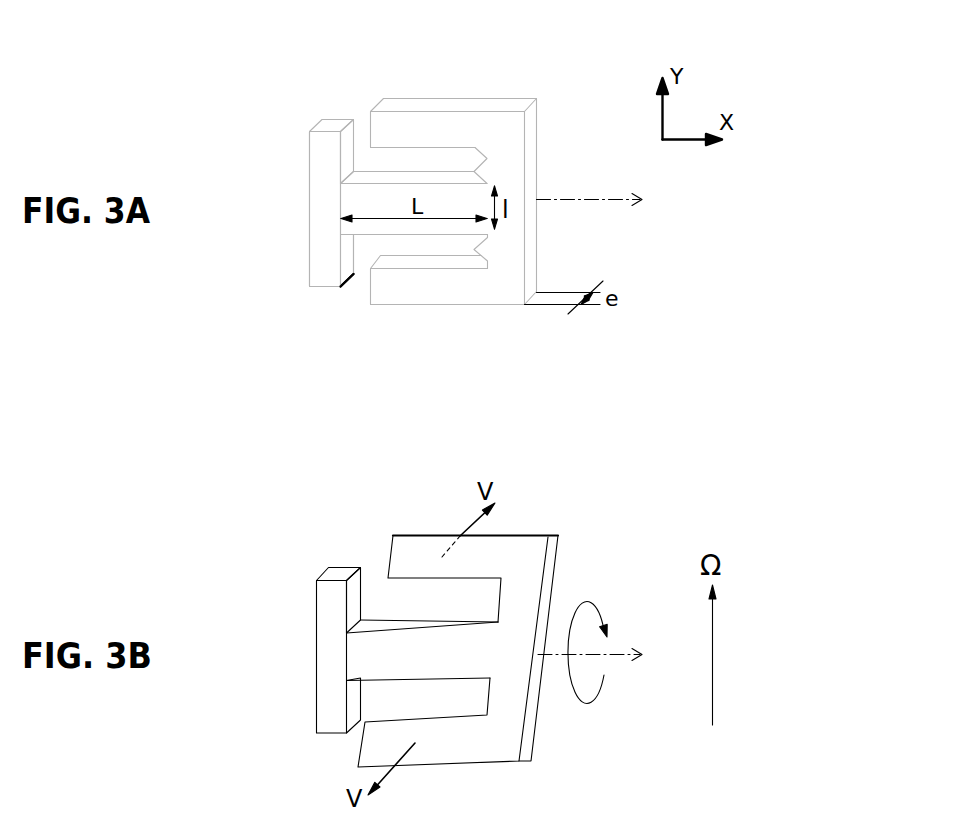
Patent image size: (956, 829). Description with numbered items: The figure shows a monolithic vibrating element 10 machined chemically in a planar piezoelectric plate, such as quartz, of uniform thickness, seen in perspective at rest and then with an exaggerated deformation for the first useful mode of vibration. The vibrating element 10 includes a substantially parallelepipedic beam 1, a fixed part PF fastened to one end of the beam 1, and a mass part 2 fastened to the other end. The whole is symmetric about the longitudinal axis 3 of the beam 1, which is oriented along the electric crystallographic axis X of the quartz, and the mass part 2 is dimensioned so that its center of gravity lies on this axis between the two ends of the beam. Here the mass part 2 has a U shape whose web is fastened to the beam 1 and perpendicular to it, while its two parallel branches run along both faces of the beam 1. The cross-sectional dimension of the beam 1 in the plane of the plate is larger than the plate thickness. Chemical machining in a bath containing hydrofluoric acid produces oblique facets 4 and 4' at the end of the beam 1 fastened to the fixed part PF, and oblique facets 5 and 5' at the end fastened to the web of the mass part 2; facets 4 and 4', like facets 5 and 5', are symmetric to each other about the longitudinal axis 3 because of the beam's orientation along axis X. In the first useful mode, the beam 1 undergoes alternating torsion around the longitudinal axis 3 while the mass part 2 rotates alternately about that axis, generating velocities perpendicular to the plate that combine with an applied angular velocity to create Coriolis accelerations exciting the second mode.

In FIG. 3A, the beam 1 is at (393, 198).
In FIG. 3B, the beam 1 is at (400, 647).
In FIG. 3A, the mass part 2 is at (503, 131).
In FIG. 3B, the mass part 2 is at (527, 563).
In FIG. 3A, the longitudinal axis 3 is at (602, 200).
In FIG. 3B, the longitudinal axis 3 is at (602, 653).
In FIG. 3A, the oblique facet 4 is at (296, 199).
In FIG. 3A, the oblique facet 4' is at (306, 289).
In FIG. 3A, the oblique facet 5 is at (532, 168).
In FIG. 3A, the oblique facet 5' is at (536, 254).
In FIG. 3A, the vibrating element 10 is at (481, 154).
In FIG. 3B, the vibrating element 10 is at (492, 604).
In FIG. 3A, the fixed part PF is at (318, 232).